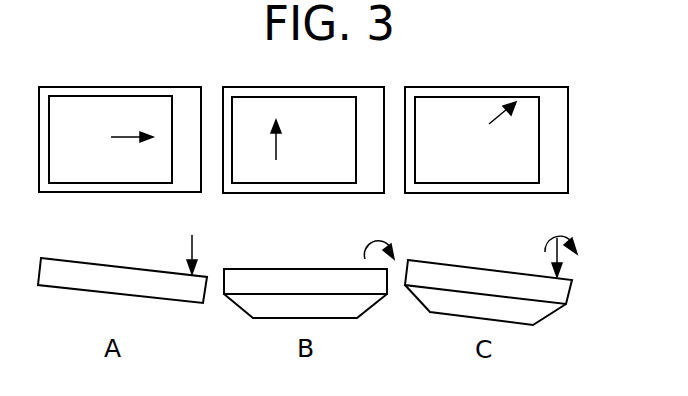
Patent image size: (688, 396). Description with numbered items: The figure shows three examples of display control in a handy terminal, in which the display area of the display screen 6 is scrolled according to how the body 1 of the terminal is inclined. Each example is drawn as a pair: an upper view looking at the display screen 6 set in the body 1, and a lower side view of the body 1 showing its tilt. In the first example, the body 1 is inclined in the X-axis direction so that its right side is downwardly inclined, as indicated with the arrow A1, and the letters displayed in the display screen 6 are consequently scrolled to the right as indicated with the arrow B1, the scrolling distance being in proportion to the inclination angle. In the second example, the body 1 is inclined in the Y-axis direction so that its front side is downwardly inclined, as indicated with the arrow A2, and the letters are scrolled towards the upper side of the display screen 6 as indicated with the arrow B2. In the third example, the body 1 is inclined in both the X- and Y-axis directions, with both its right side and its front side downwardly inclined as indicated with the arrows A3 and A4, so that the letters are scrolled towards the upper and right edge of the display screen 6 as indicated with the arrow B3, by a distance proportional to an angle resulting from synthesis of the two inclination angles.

The body 1 is at (138, 86).
The display screen 6 is at (97, 107).
The arrow B1 is at (138, 121).
The arrow B2 is at (258, 130).
The arrow B3 is at (512, 122).
The arrow A1 is at (196, 240).
The arrow A2 is at (379, 233).
The arrow A3 is at (577, 262).
The arrow A4 is at (561, 228).